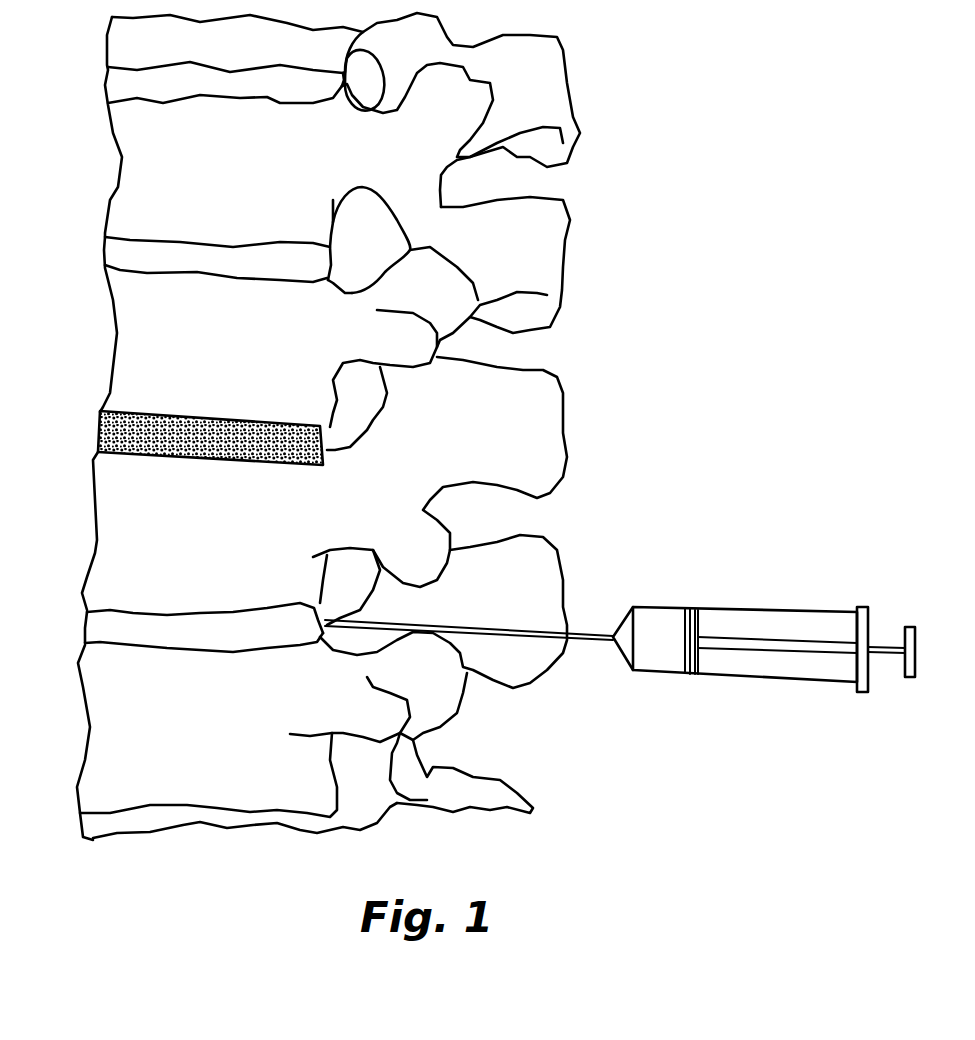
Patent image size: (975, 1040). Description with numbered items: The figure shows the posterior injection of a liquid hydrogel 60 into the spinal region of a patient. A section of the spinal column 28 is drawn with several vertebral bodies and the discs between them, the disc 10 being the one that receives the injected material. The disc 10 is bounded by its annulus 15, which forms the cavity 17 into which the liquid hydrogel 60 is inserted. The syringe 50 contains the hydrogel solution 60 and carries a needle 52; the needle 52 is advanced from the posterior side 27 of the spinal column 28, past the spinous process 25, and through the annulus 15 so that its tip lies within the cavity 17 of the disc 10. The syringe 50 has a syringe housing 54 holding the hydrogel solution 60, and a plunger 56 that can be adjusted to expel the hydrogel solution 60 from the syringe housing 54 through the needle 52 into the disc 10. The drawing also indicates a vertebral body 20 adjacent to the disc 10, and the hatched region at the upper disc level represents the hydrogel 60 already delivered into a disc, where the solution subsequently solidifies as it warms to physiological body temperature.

The disc 10 is at (83, 633).
The annulus 15 is at (83, 618).
The cavity 17 is at (133, 632).
The vertebral body 20 is at (103, 573).
The spinous process 25 is at (540, 383).
The posterior side 27 is at (549, 517).
The spinal column 28 is at (497, 178).
The syringe 50 is at (620, 625).
The needle 52 is at (577, 632).
The syringe housing 54 is at (767, 612).
The plunger 56 is at (697, 672).
The liquid hydrogel 60 is at (100, 413).